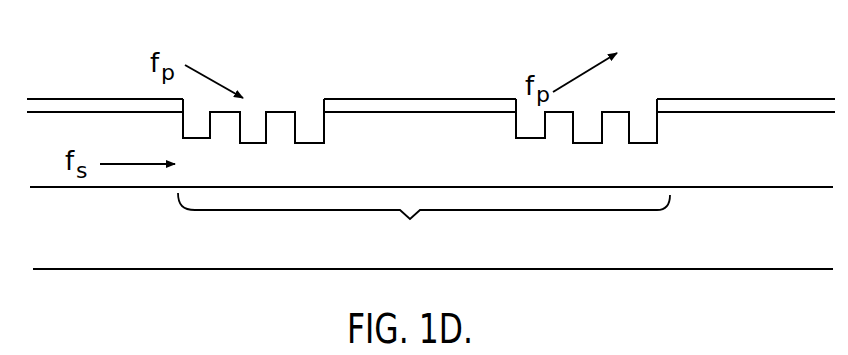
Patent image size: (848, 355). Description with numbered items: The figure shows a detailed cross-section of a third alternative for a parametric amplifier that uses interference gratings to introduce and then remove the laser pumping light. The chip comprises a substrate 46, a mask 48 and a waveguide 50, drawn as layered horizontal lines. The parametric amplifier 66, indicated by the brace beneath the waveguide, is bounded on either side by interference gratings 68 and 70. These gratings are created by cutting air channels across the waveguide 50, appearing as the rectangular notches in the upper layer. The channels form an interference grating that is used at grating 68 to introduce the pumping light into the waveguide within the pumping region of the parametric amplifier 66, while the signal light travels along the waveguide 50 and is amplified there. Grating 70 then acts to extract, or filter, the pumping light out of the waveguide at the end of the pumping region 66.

The substrate 46 is at (740, 245).
The mask 48 is at (710, 103).
The waveguide 50 is at (93, 123).
The parametric amplifier 66 is at (424, 223).
The interference grating 68 is at (281, 112).
The interference grating 70 is at (613, 107).